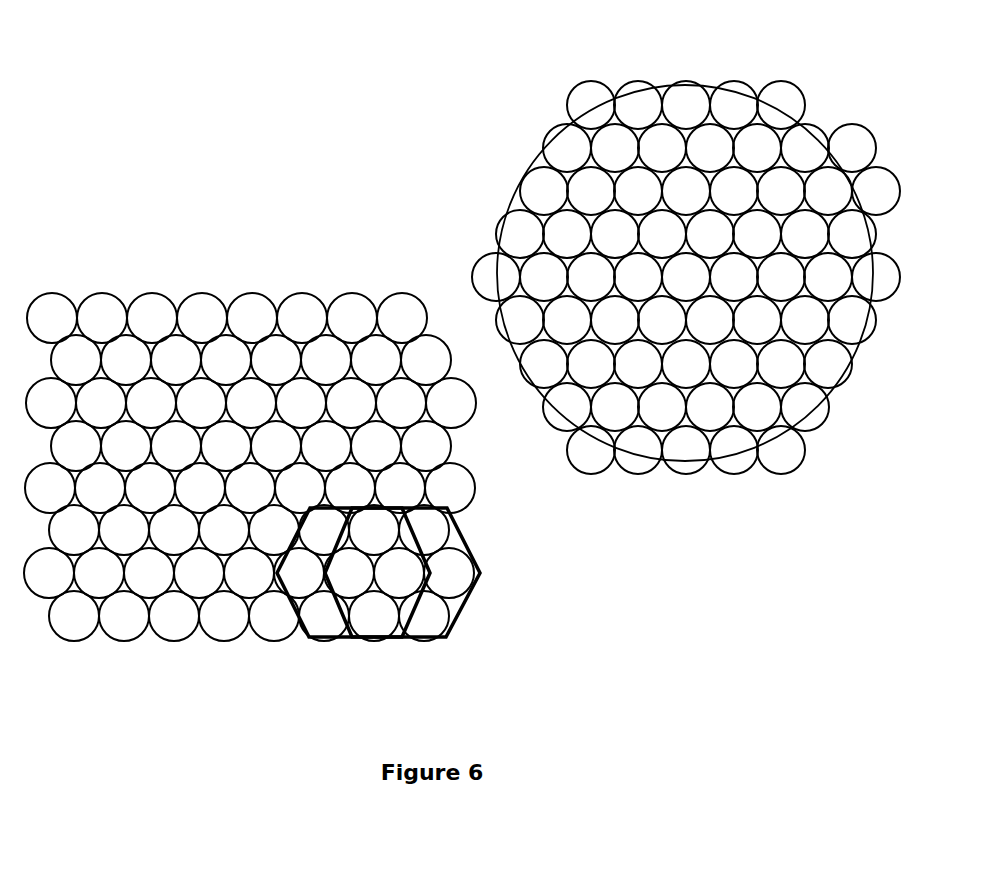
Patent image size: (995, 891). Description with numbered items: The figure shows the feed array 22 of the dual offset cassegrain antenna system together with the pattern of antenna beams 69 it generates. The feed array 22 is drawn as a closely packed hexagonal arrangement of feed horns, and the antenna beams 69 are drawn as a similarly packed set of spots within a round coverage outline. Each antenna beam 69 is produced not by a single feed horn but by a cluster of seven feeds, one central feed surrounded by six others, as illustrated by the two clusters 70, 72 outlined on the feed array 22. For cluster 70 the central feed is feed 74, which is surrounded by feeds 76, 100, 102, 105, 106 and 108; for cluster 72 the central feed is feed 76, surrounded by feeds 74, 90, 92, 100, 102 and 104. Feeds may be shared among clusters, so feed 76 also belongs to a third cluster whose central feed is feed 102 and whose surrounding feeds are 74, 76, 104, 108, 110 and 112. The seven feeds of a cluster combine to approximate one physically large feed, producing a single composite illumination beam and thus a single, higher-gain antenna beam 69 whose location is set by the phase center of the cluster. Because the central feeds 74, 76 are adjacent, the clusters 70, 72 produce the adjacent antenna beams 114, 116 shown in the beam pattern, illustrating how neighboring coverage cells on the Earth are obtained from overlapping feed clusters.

The feed array 22 is at (231, 258).
The antenna beam 69 is at (541, 107).
The cluster 70 is at (363, 646).
The cluster 72 is at (470, 603).
The central feed 74 is at (349, 573).
The central feed 76 is at (399, 573).
The surrounding feed 90 is at (424, 616).
The surrounding feed 92 is at (449, 573).
The surrounding feed 100 is at (374, 616).
The feed 102 is at (374, 530).
The surrounding feed 104 is at (424, 530).
The surrounding feed 105 is at (324, 616).
The surrounding feed 106 is at (299, 573).
The surrounding feed 108 is at (324, 530).
The surrounding feed 110 is at (350, 488).
The surrounding feed 112 is at (400, 488).
The antenna beam 114 is at (363, 567).
The antenna beam 116 is at (413, 568).